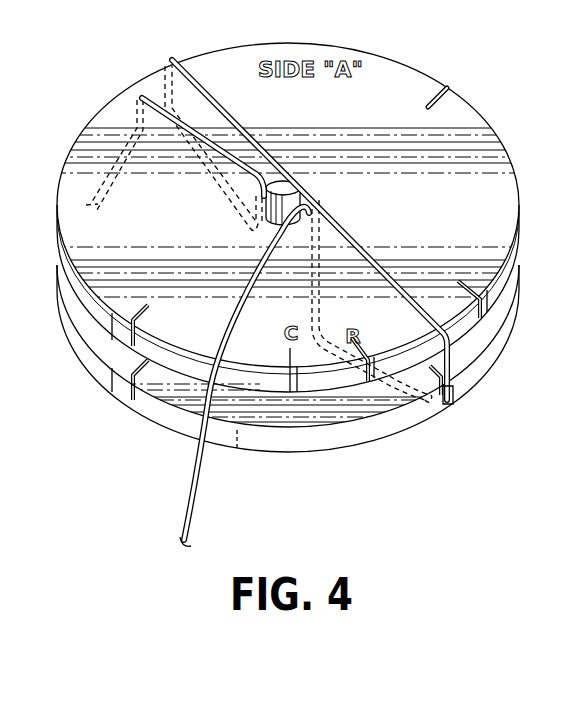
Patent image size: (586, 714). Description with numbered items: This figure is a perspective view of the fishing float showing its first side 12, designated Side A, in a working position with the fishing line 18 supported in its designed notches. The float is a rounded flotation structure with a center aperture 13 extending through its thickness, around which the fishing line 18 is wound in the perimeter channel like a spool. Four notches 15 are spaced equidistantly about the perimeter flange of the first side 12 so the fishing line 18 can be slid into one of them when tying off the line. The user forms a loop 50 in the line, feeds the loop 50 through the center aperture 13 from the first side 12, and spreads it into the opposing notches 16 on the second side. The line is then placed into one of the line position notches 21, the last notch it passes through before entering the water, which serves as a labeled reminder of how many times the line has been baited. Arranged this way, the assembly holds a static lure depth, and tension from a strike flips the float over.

The first side 12 is at (488, 361).
The aperture 13 is at (282, 180).
The notches 15 is at (437, 88).
The notches 16 is at (455, 398).
The fishing line 18 is at (183, 507).
The line position notches 21 is at (217, 380).
The loop 50 is at (348, 229).